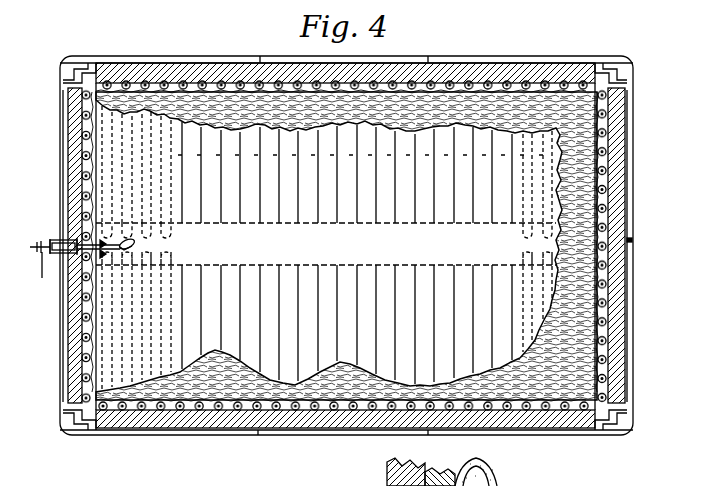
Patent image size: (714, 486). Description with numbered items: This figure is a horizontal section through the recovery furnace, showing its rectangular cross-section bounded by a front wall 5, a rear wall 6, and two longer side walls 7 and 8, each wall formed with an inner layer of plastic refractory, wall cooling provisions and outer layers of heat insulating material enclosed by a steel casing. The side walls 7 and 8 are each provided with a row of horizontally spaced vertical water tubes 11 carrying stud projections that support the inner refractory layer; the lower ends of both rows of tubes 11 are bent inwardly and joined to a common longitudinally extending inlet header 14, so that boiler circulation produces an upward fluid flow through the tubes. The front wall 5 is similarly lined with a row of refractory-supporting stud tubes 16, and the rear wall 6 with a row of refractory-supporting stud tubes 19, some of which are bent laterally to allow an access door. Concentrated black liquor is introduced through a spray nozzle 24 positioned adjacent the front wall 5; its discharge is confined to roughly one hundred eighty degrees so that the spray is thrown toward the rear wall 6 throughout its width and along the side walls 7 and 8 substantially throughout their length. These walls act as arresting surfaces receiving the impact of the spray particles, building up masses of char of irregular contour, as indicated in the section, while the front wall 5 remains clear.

The front wall 5 is at (60, 305).
The rear wall 6 is at (633, 291).
The side wall 7 is at (196, 58).
The side wall 8 is at (217, 430).
The water tubes 11 is at (490, 63).
The inlet header 14 is at (358, 227).
The stud tubes 16 is at (72, 208).
The stud tubes 19 is at (607, 167).
The spray nozzle 24 is at (140, 244).